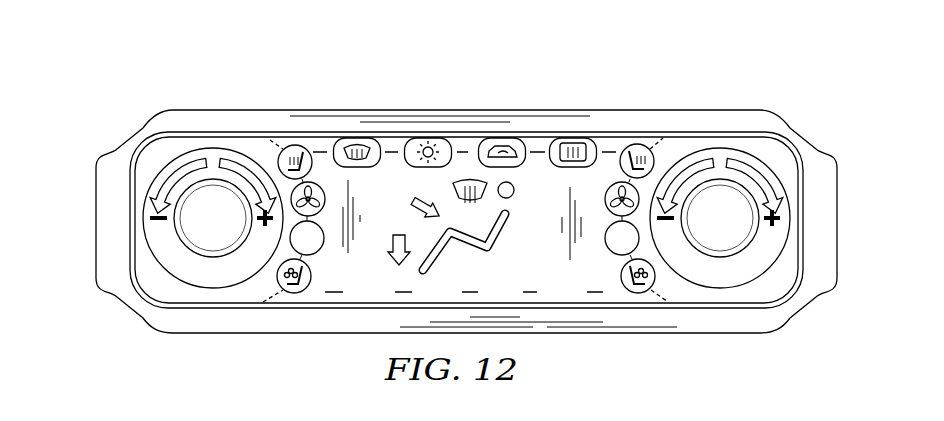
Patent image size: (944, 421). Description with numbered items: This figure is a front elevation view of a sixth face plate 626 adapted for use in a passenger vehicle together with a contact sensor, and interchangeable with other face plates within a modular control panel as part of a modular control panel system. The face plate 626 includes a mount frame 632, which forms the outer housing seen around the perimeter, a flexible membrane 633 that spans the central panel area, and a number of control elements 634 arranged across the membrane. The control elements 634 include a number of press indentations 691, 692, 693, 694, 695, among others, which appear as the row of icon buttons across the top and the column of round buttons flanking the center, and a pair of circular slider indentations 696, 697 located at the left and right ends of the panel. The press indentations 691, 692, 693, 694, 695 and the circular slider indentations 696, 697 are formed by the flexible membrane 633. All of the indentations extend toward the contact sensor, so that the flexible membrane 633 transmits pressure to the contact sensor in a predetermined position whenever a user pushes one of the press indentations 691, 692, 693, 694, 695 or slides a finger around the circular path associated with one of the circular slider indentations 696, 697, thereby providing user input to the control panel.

The sixth face plate 626 is at (120, 95).
The mount frame 632 is at (795, 127).
The flexible membrane 633 is at (617, 289).
The control elements 634 is at (689, 119).
The press indentation 691 is at (335, 147).
The press indentation 692 is at (407, 147).
The press indentation 693 is at (481, 147).
The press indentation 694 is at (548, 150).
The press indentation 695 is at (639, 144).
The circular slider indentation 696 is at (205, 274).
The circular slider indentation 697 is at (718, 276).